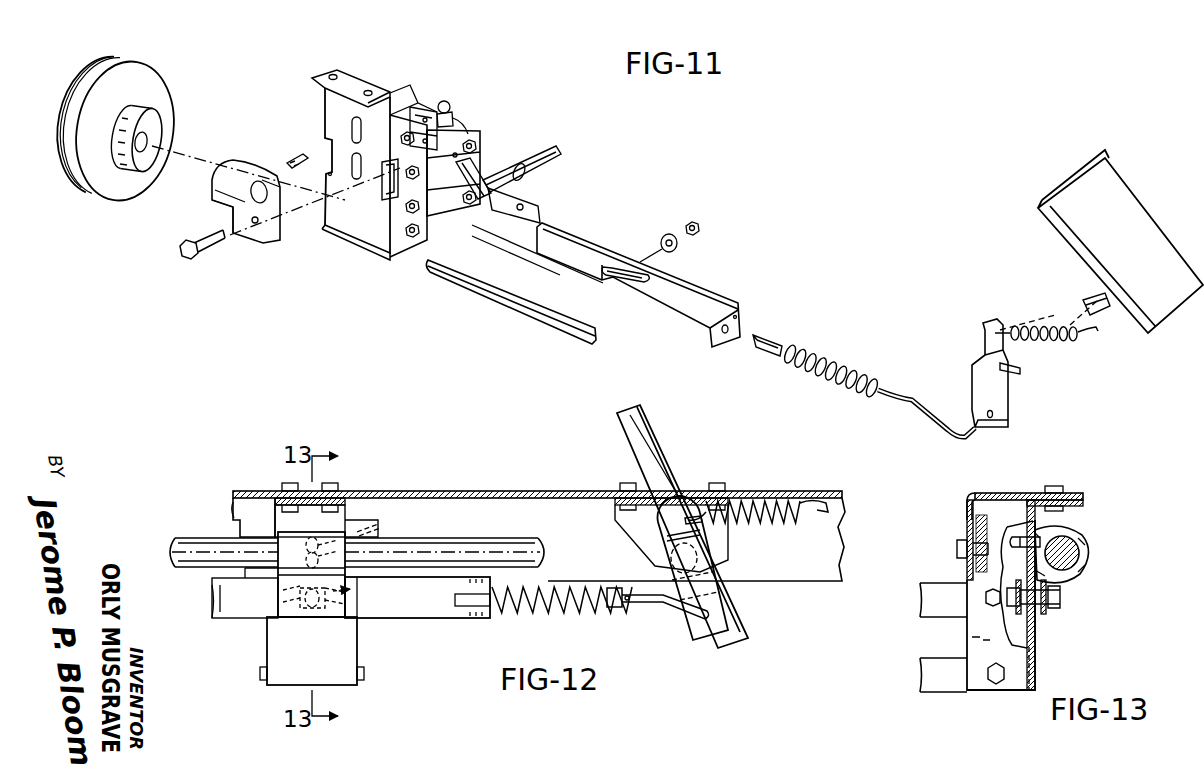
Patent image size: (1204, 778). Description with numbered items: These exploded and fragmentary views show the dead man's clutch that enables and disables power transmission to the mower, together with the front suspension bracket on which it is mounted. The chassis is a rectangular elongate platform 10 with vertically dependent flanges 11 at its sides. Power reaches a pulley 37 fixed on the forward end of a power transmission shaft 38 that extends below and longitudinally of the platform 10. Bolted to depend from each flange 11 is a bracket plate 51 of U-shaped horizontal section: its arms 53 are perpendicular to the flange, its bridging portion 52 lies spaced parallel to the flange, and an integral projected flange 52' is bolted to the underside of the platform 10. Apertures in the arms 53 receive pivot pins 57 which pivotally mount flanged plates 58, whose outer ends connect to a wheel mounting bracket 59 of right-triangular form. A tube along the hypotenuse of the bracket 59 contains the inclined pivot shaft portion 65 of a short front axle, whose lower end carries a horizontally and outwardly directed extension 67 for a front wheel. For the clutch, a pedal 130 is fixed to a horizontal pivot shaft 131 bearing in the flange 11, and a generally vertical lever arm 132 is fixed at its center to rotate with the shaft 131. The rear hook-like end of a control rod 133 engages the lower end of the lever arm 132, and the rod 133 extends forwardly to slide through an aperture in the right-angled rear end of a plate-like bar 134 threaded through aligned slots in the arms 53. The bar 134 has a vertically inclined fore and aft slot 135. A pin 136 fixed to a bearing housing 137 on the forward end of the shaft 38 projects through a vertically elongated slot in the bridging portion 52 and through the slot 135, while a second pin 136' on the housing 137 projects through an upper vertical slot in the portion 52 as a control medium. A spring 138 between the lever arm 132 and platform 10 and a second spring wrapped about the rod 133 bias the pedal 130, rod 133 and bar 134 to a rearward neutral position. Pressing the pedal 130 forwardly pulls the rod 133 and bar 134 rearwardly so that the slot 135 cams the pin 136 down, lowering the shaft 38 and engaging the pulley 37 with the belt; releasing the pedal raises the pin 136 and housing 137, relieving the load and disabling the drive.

In FIG. 12, the platform 10 is at (471, 489).
In FIG. 13, the platform 10 is at (1007, 491).
In FIG. 12, the flange 11 is at (843, 514).
In FIG. 13, the flange 11 is at (967, 512).
In FIG. 11, the pulley 37 is at (155, 82).
In FIG. 11, the power transmission shaft 38 is at (507, 311).
In FIG. 12, the power transmission shaft 38 is at (509, 545).
In FIG. 13, the power transmission shaft 38 is at (1082, 558).
In FIG. 11, the bracket plate 51 is at (372, 78).
In FIG. 12, the bracket plate 51 is at (342, 524).
In FIG. 13, the bracket plate 51 is at (1042, 654).
In FIG. 11, the bridging portion 52 is at (362, 170).
In FIG. 13, the bridging portion 52 is at (1029, 588).
In FIG. 11, the projected flange 52' is at (347, 65).
In FIG. 11, the arms 53 is at (391, 248).
In FIG. 13, the arms 53 is at (1013, 686).
In FIG. 11, the pivot pin 57 is at (400, 231).
In FIG. 13, the pivot pin 57 is at (985, 596).
In FIG. 11, the flanged plate 58 is at (462, 128).
In FIG. 13, the flanged plate 58 is at (940, 660).
In FIG. 11, the wheel mounting bracket 59 is at (490, 165).
In FIG. 11, the pivot shaft portion 65 is at (445, 101).
In FIG. 11, the extension 67 is at (559, 153).
In FIG. 11, the pedal 130 is at (1148, 262).
In FIG. 12, the pedal 130 is at (616, 430).
In FIG. 11, the pivot shaft 131 is at (1018, 369).
In FIG. 12, the pivot shaft 131 is at (722, 544).
In FIG. 11, the lever arm 132 is at (1010, 396).
In FIG. 12, the lever arm 132 is at (706, 574).
In FIG. 11, the control rod 133 is at (915, 398).
In FIG. 12, the control rod 133 is at (663, 606).
In FIG. 11, the plate-like bar 134 is at (700, 300).
In FIG. 12, the plate-like bar 134 is at (462, 612).
In FIG. 11, the slot 135 is at (614, 268).
In FIG. 12, the slot 135 is at (353, 595).
In FIG. 11, the pin 136 is at (226, 255).
In FIG. 12, the pin 136 is at (312, 635).
In FIG. 13, the pin 136 is at (1069, 597).
In FIG. 11, the second pin 136' is at (283, 143).
In FIG. 12, the second pin 136' is at (399, 524).
In FIG. 13, the second pin 136' is at (1066, 522).
In FIG. 11, the bearing housing 137 is at (215, 200).
In FIG. 12, the bearing housing 137 is at (283, 558).
In FIG. 13, the bearing housing 137 is at (1087, 537).
In FIG. 11, the spring 138 is at (1028, 328).
In FIG. 12, the spring 138 is at (768, 500).